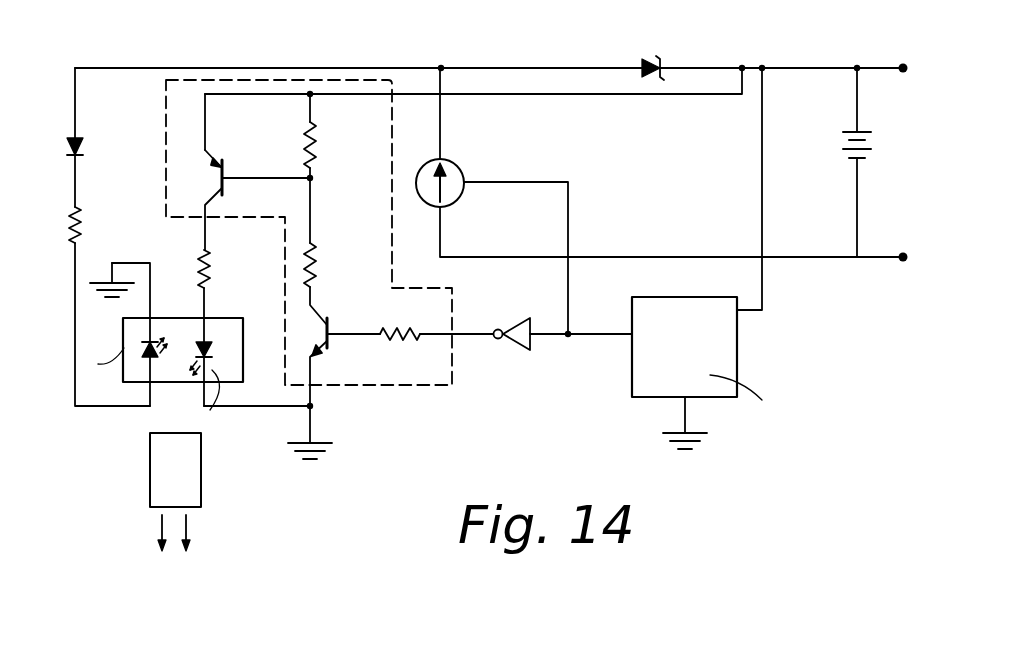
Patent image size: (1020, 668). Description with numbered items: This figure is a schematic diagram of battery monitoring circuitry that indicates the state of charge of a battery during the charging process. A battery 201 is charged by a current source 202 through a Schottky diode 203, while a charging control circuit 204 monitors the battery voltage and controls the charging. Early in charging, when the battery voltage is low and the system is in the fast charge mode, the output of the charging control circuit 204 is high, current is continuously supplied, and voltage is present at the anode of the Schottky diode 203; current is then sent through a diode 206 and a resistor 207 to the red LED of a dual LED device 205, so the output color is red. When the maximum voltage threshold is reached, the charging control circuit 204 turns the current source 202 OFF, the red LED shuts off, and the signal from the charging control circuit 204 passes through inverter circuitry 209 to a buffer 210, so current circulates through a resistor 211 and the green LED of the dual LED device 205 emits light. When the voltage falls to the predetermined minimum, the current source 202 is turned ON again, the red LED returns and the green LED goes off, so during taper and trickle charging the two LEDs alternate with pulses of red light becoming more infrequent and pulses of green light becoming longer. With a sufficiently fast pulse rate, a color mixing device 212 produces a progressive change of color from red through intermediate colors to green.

The battery 201 is at (843, 152).
The current source 202 is at (458, 200).
The Schottky diode 203 is at (647, 54).
The charging control circuit 204 is at (737, 357).
The dual LED device 205 is at (122, 372).
The diode 206 is at (90, 145).
The resistor 207 is at (80, 223).
The inverter circuitry 209 is at (513, 351).
The buffer 210 is at (390, 384).
The resistor 211 is at (195, 262).
The color mixing device 212 is at (190, 470).